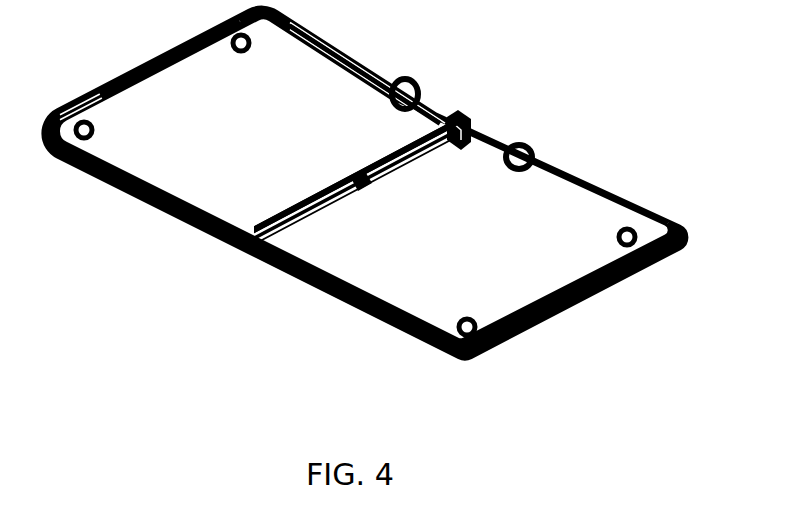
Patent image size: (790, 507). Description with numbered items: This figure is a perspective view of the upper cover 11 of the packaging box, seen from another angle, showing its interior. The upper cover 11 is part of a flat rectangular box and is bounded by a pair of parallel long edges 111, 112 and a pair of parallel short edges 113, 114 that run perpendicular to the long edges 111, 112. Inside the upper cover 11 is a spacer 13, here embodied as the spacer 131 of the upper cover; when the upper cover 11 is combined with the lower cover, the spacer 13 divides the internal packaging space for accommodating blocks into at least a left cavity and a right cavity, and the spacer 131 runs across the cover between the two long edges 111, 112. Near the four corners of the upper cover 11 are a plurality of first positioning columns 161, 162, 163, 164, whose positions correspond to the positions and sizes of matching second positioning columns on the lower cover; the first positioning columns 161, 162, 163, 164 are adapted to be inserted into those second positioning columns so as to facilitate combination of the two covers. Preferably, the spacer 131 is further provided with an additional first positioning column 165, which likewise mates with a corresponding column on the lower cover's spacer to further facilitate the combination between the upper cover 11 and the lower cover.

The upper cover 11 is at (605, 38).
The long edge 111 is at (342, 50).
The long edge 112 is at (147, 197).
The short edge 113 is at (153, 66).
The short edge 114 is at (577, 300).
The spacer 13 is at (303, 215).
The spacer 131 is at (358, 174).
The first positioning column 161 is at (93, 124).
The first positioning column 162 is at (469, 318).
The first positioning column 163 is at (618, 235).
The first positioning column 164 is at (249, 50).
The first positioning column 165 is at (361, 187).